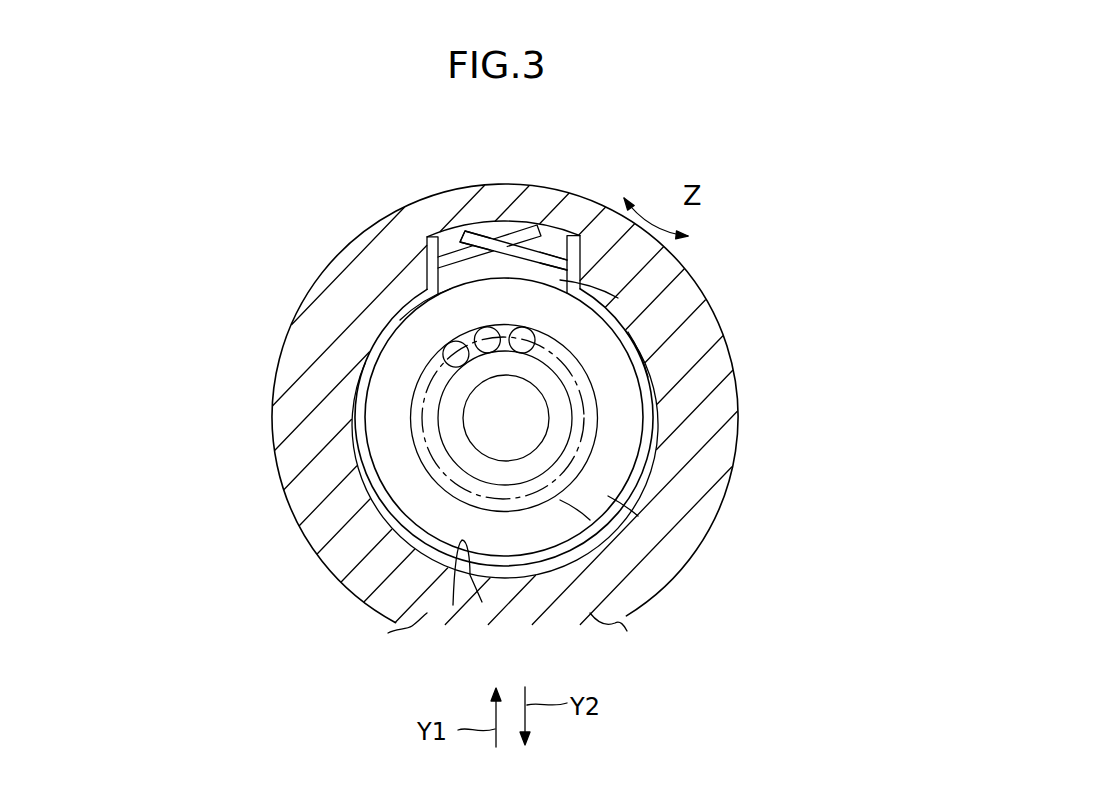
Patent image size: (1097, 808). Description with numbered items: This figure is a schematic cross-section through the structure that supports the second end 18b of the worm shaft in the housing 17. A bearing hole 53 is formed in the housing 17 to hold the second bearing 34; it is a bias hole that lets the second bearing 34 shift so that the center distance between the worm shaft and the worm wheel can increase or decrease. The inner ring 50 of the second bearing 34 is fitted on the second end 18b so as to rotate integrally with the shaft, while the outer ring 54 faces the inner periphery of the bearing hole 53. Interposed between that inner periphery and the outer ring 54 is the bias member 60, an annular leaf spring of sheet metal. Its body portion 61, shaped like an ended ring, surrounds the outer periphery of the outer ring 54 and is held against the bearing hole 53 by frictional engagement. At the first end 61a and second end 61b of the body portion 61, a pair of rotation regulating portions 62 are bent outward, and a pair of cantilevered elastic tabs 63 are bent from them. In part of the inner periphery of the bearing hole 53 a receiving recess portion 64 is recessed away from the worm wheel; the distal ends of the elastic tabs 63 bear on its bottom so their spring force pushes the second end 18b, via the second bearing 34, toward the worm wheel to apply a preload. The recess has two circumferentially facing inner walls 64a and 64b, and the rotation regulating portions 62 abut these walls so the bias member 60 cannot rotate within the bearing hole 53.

The housing 17 is at (724, 447).
The second end of the worm shaft 18b is at (381, 520).
The second bearing 34 is at (642, 352).
The inner ring 50 is at (553, 447).
The bearing hole 53 is at (453, 605).
The outer ring 54 is at (573, 513).
The bias member 60 is at (628, 514).
The body portion 61 is at (507, 427).
The first end 61a is at (602, 290).
The second end 61b is at (436, 298).
The rotation regulating portions 62 is at (583, 236).
The elastic tabs 63 is at (463, 230).
The receiving recess portion 64 is at (492, 238).
The inner wall 64a is at (546, 226).
The inner wall 64b is at (440, 232).